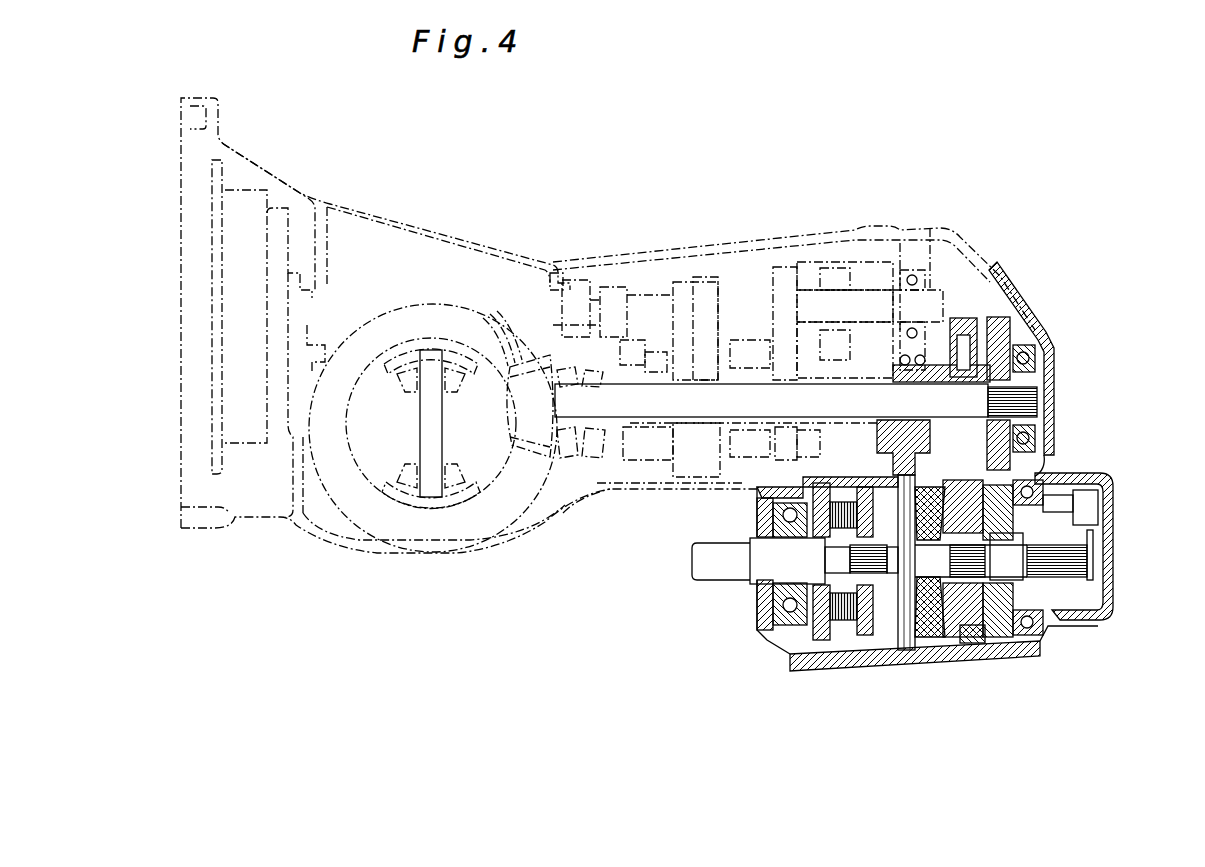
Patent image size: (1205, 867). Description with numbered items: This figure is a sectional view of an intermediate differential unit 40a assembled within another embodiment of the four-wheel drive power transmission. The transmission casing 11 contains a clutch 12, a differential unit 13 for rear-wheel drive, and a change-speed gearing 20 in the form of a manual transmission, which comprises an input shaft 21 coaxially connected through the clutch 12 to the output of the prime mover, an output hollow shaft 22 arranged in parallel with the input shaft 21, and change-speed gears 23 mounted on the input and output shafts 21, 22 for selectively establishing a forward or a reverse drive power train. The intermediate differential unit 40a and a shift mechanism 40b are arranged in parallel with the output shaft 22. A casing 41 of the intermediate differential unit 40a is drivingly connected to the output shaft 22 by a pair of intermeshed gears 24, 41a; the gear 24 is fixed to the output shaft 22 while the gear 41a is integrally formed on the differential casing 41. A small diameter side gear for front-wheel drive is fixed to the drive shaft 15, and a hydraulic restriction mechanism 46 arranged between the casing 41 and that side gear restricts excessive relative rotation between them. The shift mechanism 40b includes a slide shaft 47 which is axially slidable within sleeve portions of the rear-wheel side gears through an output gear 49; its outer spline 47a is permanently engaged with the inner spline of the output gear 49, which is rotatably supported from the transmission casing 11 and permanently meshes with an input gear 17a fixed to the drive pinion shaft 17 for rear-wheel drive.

The transmission casing 11 is at (804, 240).
The clutch 12 is at (256, 196).
The differential unit 13 is at (447, 503).
The drive shaft 15 is at (722, 573).
The drive pinion shaft 17 is at (618, 413).
The input gear 17a is at (995, 314).
The change-speed gearing 20 is at (706, 272).
The input shaft 21 is at (648, 303).
The output hollow shaft 22 is at (860, 425).
The change-speed gears 23 is at (780, 333).
The gear 24 is at (965, 318).
The intermediate differential unit 40a is at (949, 648).
The shift mechanism 40b is at (1100, 545).
The casing 41 is at (850, 637).
The gear 41a is at (972, 645).
The hydraulic restriction mechanism 46 is at (840, 637).
The slide shaft 47 is at (1105, 575).
The outer spline 47a is at (1067, 567).
The output gear 49 is at (1003, 640).